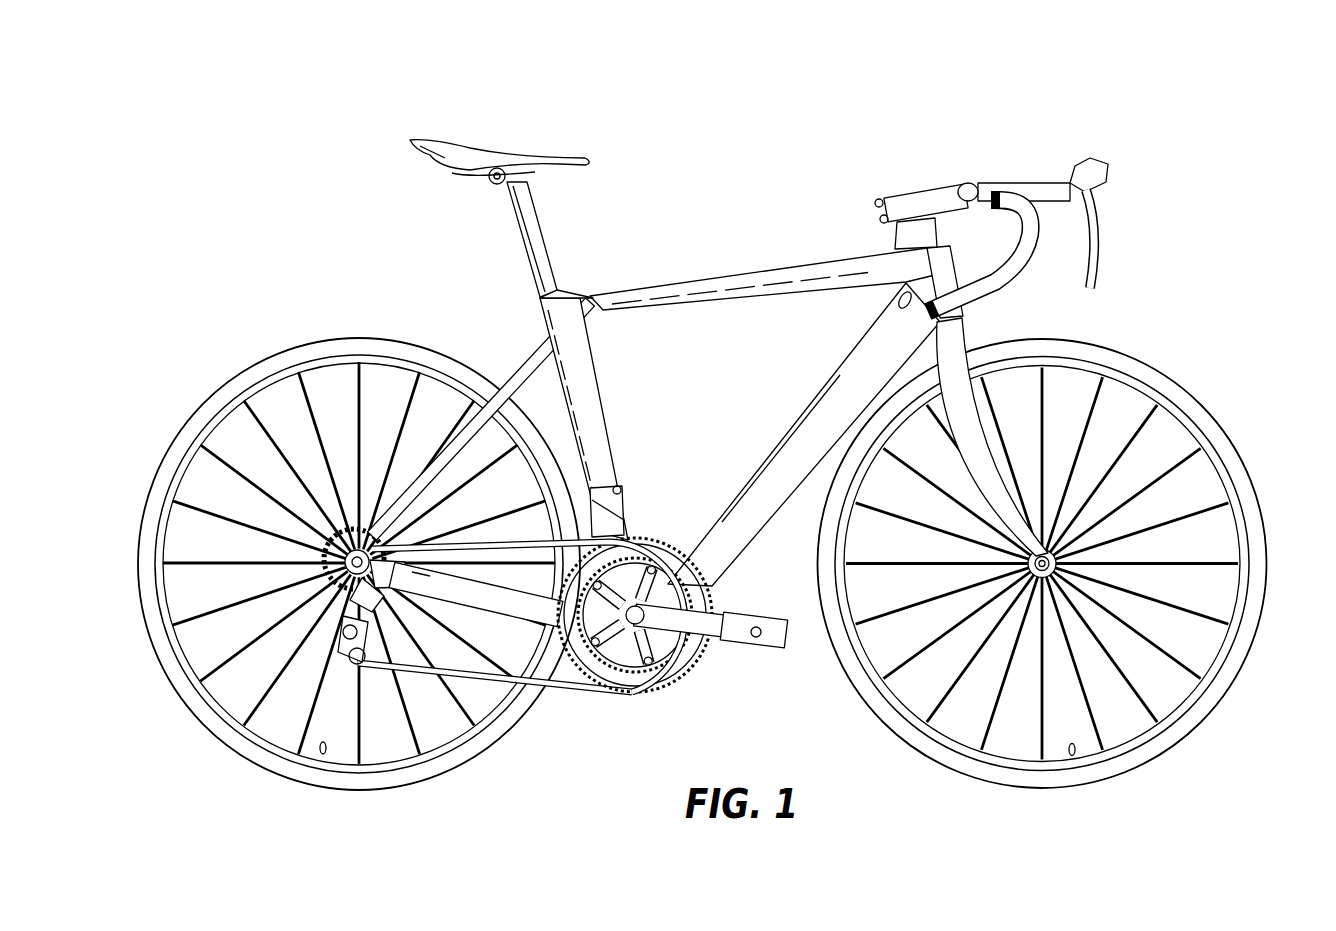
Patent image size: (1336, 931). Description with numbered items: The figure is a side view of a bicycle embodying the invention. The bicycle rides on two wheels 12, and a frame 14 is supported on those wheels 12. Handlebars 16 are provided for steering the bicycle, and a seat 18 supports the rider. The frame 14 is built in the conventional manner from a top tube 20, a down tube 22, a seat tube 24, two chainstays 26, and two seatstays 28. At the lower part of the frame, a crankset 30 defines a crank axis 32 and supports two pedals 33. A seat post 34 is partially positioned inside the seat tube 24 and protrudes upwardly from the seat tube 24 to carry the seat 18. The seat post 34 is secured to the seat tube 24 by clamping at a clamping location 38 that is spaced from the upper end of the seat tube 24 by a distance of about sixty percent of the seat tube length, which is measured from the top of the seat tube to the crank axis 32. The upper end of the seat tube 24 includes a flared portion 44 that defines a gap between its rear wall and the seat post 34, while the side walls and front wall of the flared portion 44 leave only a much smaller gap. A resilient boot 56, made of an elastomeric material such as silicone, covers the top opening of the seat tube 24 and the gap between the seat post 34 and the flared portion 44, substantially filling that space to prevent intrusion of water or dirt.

The wheels 12 is at (236, 382).
The frame 14 is at (708, 461).
The handlebars 16 is at (1002, 288).
The seat 18 is at (460, 152).
The top tube 20 is at (762, 316).
The down tube 22 is at (810, 422).
The seat tube 24 is at (590, 452).
The chainstays 26 is at (478, 420).
The seatstays 28 is at (512, 598).
The crankset 30 is at (690, 694).
The crank axis 32 is at (628, 627).
The pedals 33 is at (777, 630).
The seat post 34 is at (527, 226).
The clamping location 38 is at (645, 481).
The flared portion 44 is at (737, 283).
The resilient boot 56 is at (553, 315).